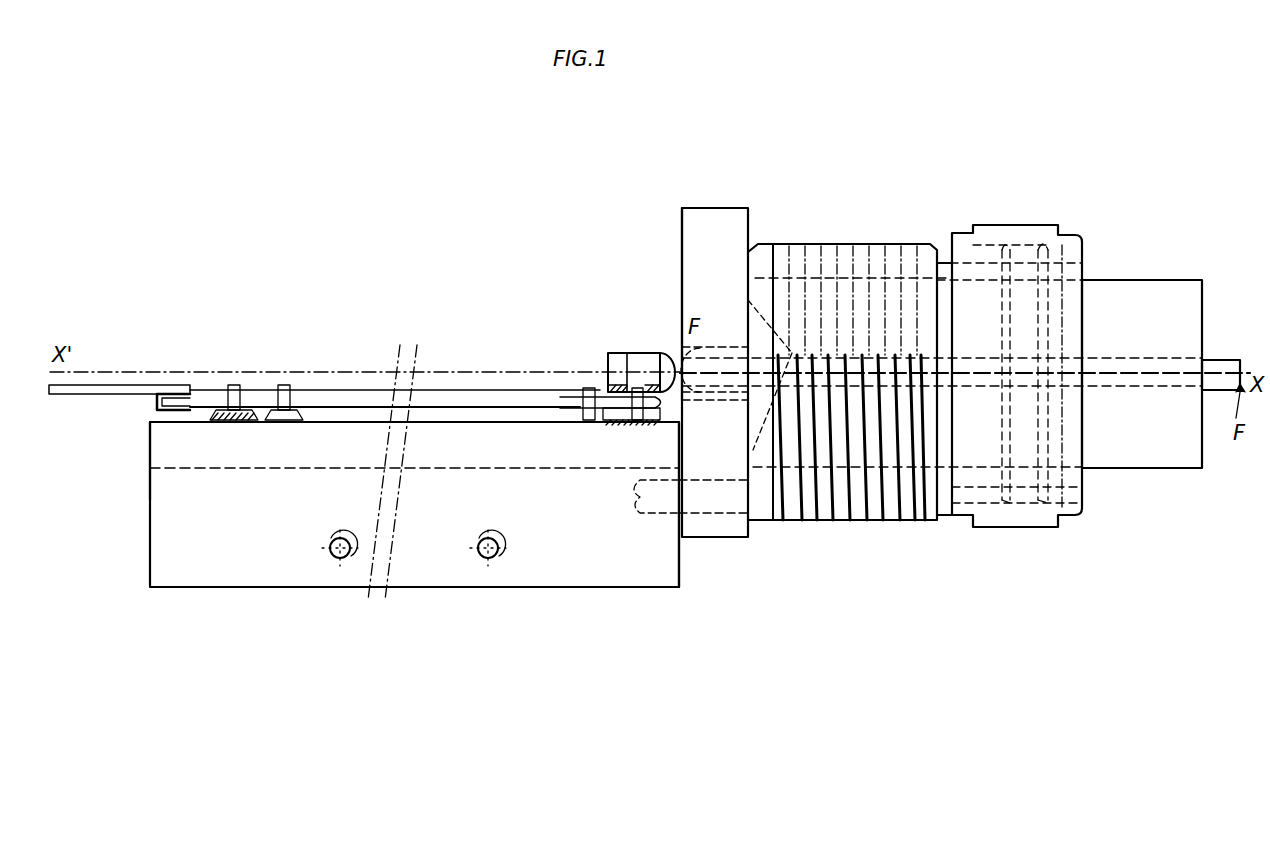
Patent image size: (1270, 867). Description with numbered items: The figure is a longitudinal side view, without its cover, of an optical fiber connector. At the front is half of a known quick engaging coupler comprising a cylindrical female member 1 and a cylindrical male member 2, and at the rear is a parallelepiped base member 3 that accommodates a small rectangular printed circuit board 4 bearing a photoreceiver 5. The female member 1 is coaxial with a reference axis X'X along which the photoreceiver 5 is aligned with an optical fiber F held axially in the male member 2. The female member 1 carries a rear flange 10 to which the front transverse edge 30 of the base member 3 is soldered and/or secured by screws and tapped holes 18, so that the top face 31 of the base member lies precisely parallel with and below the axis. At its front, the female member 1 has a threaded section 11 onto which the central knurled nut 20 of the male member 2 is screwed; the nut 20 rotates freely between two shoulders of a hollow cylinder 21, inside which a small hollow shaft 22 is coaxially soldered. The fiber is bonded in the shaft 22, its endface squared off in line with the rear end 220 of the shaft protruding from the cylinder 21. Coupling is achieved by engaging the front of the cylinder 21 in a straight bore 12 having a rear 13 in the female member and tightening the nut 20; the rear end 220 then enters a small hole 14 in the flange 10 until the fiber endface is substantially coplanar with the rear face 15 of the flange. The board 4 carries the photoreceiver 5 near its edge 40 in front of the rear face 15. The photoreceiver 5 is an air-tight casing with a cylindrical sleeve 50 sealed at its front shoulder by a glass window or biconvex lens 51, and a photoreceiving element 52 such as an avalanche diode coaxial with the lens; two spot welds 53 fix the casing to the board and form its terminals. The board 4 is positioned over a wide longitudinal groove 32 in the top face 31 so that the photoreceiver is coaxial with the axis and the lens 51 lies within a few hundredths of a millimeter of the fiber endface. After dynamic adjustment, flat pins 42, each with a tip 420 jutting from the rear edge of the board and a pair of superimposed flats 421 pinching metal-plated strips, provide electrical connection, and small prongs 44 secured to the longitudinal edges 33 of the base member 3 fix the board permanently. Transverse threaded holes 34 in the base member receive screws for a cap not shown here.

The female member 1 is at (840, 512).
The male member 2 is at (961, 439).
The base member 3 is at (532, 576).
The printed circuit board 4 is at (328, 396).
The photoreceiver 5 is at (621, 369).
The rear flange 10 is at (714, 214).
The threaded section 11 is at (1015, 262).
The straight bore 12 is at (912, 290).
The rear of bore 13 is at (748, 300).
The small hole 14 is at (720, 402).
The rear face of flange 15 is at (682, 222).
The tapped holes 18 is at (637, 520).
The knurled nut 20 is at (1020, 356).
The hollow cylinder 21 is at (1145, 292).
The hollow shaft 22 is at (1220, 360).
The front transverse edge 30 is at (681, 574).
The top face 31 is at (512, 422).
The longitudinal groove 32 is at (160, 472).
The longitudinal edges 33 is at (160, 443).
The transverse threaded holes 34 is at (500, 542).
The edge of board 40 is at (668, 410).
The flat pins 42 is at (142, 371).
The prongs 44 is at (240, 392).
The sleeve 50 is at (621, 353).
The lens 51 is at (668, 355).
The photoreceiving element 52 is at (612, 357).
The spot welds 53 is at (606, 388).
The rear end of shaft 220 is at (724, 348).
The pin tip 420 is at (110, 385).
The superimposed flats 421 is at (182, 385).